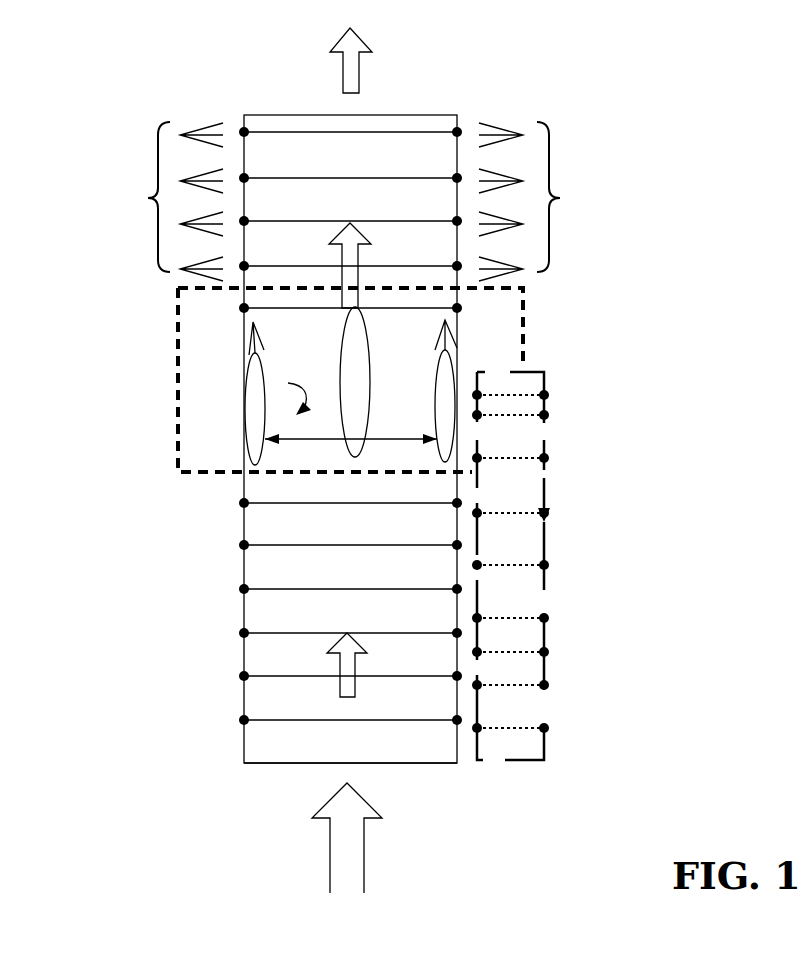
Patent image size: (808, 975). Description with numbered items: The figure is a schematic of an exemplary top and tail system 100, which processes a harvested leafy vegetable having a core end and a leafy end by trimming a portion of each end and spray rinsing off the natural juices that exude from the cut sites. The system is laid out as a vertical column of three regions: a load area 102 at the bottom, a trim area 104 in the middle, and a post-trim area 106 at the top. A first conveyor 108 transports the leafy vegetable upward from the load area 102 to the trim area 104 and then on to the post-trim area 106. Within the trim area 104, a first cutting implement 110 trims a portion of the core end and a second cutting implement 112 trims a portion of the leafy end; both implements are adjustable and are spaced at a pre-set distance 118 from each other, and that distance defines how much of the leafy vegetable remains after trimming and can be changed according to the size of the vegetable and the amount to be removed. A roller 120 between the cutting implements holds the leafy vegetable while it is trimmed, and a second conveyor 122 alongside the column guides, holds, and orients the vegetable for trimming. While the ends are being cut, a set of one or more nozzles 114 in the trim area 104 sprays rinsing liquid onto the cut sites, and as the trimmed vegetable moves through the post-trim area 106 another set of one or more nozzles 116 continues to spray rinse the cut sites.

The top and tail system 100 is at (414, 460).
The load area 102 is at (210, 648).
The trim area 104 is at (197, 478).
The post-trim area 106 is at (232, 98).
The first conveyor 108 is at (267, 763).
The first cutting implement 110 is at (460, 353).
The second cutting implement 112 is at (242, 445).
The set of one or more nozzles 114 is at (247, 325).
The set of one or more nozzles 116 is at (148, 198).
The distance 118 is at (392, 438).
The roller 120 is at (342, 427).
The second conveyor 122 is at (523, 763).